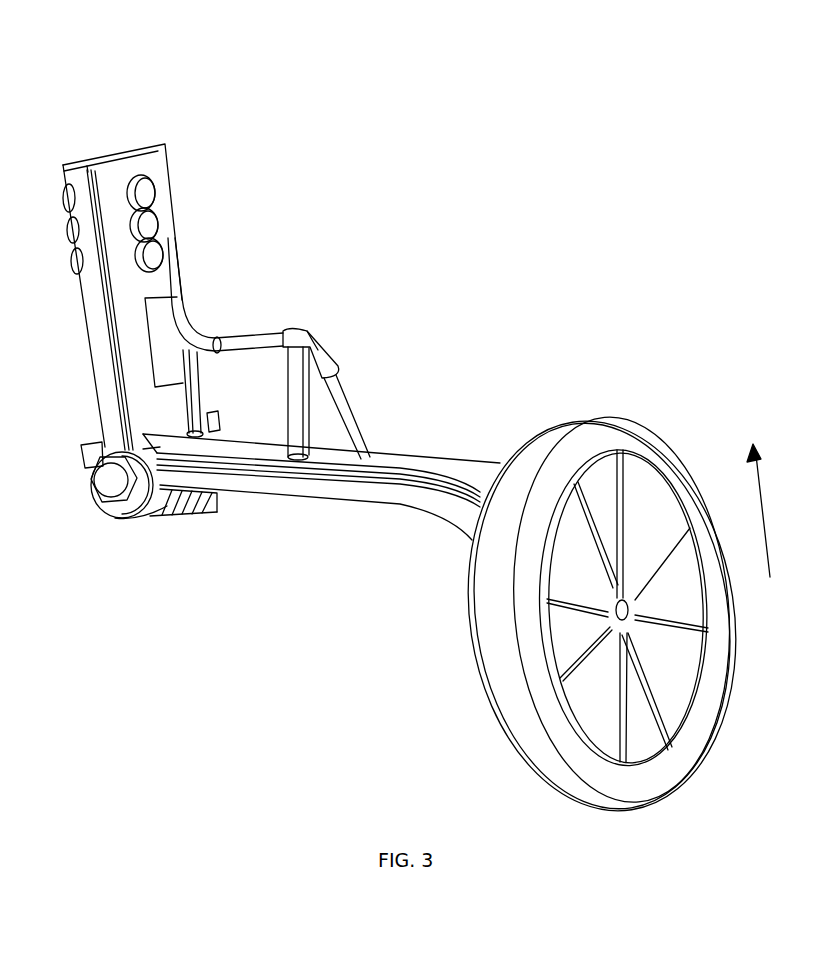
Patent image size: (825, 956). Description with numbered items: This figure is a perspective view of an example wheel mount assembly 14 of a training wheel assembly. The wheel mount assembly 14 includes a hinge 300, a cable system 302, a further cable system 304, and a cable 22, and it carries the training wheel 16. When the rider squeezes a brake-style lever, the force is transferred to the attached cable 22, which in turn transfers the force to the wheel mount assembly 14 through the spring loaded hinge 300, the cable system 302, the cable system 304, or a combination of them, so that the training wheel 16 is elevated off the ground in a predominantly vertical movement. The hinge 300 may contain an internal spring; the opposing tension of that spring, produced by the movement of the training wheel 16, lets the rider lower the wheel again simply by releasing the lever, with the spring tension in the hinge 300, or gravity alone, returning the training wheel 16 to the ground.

The wheel mount assembly 14 is at (128, 105).
The training wheel 16 is at (730, 697).
The cable 22 is at (200, 493).
The hinge 300 is at (137, 520).
The cable system 302 is at (200, 520).
The cable system 304 is at (330, 347).